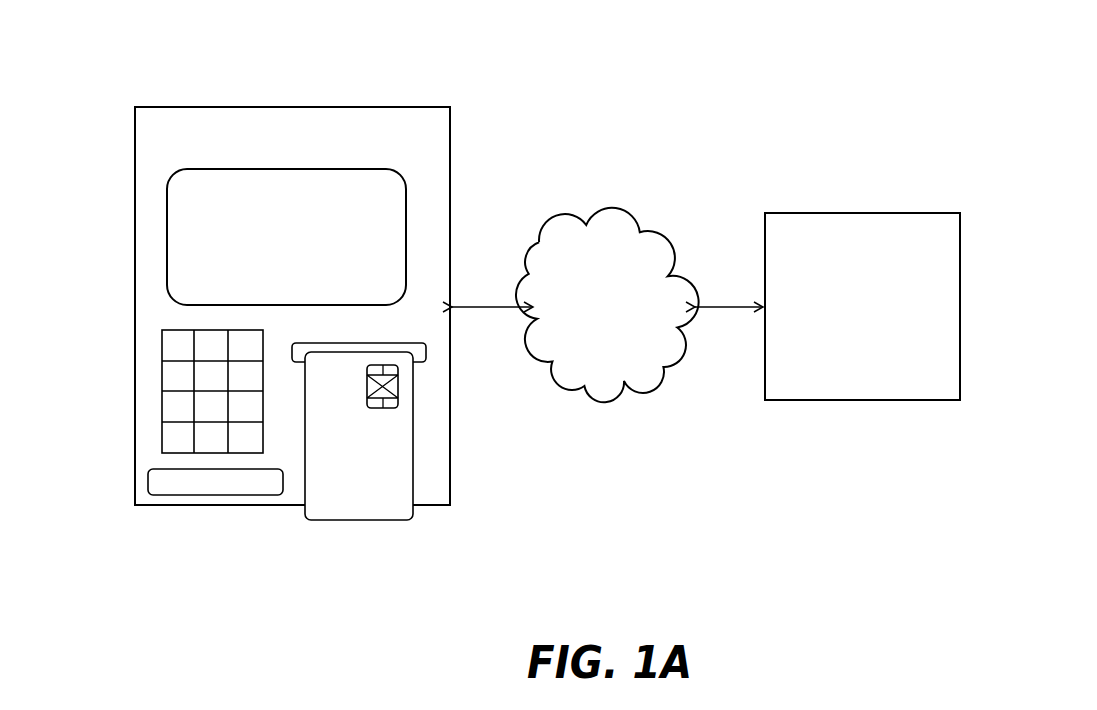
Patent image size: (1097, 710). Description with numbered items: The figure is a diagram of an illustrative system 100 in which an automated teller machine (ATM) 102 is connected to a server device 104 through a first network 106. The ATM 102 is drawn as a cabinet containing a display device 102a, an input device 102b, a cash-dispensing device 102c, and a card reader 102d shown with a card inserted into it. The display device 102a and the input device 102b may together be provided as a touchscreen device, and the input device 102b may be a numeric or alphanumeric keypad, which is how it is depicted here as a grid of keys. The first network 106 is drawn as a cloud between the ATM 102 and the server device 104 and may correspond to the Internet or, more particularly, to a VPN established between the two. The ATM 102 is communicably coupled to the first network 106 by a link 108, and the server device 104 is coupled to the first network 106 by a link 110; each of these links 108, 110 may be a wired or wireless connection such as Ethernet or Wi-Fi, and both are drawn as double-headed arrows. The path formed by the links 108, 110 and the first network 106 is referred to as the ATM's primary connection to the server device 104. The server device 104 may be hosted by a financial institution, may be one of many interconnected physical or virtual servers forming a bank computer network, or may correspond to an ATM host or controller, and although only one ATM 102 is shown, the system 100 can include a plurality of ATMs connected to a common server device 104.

The system 100 is at (698, 108).
The automated teller machine 102 is at (450, 167).
The display device 102a is at (167, 233).
The input device 102b is at (162, 370).
The cash-dispensing device 102c is at (148, 482).
The card reader 102d is at (420, 362).
The server device 104 is at (873, 212).
The first network 106 is at (594, 327).
The link 108 is at (482, 311).
The link 110 is at (720, 311).